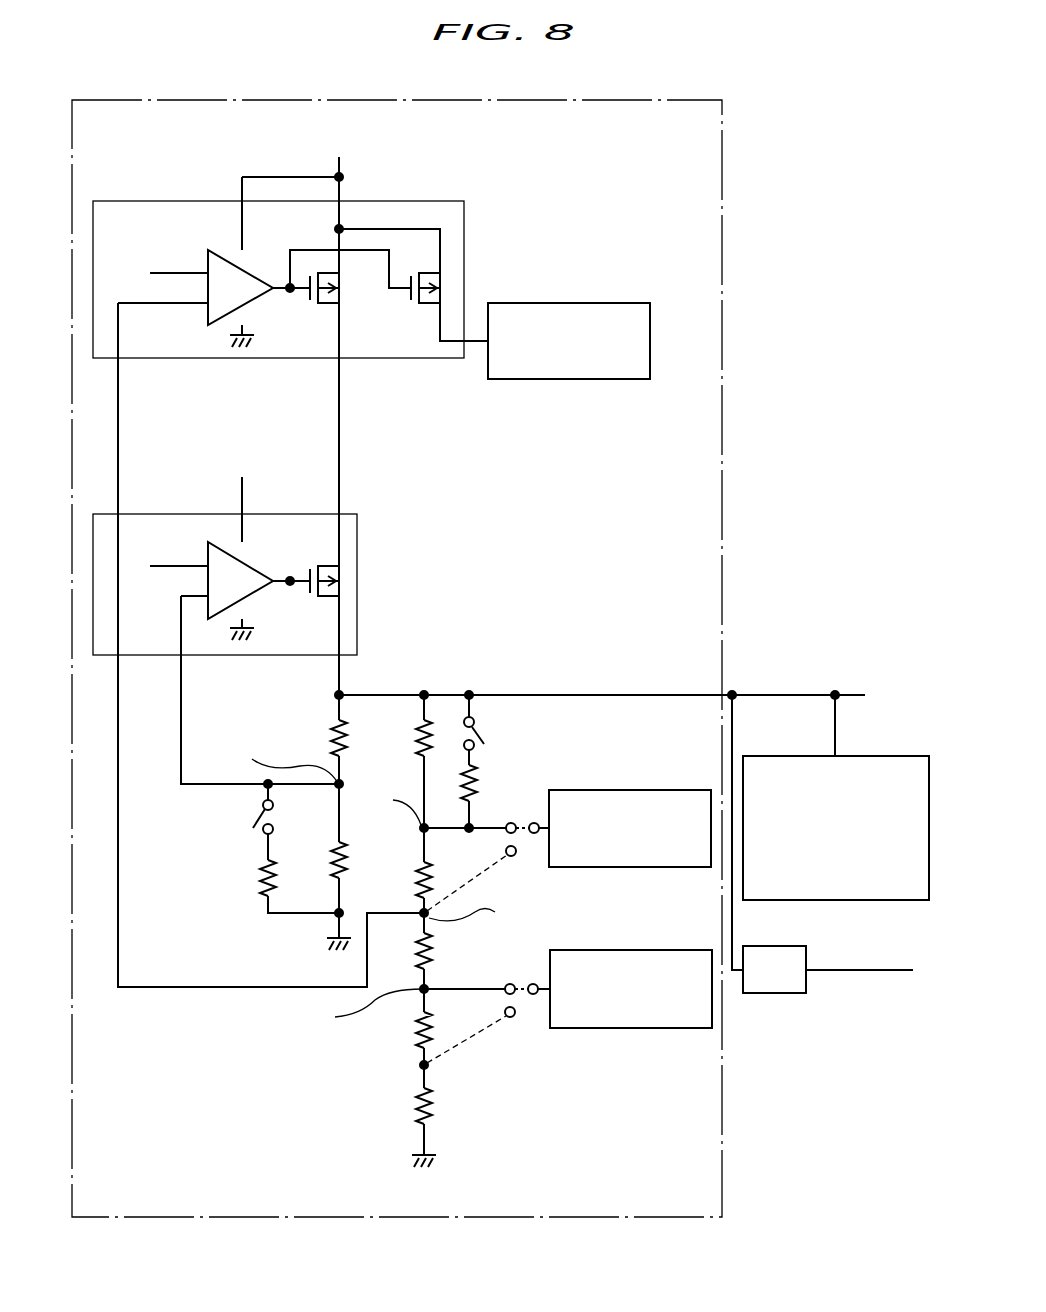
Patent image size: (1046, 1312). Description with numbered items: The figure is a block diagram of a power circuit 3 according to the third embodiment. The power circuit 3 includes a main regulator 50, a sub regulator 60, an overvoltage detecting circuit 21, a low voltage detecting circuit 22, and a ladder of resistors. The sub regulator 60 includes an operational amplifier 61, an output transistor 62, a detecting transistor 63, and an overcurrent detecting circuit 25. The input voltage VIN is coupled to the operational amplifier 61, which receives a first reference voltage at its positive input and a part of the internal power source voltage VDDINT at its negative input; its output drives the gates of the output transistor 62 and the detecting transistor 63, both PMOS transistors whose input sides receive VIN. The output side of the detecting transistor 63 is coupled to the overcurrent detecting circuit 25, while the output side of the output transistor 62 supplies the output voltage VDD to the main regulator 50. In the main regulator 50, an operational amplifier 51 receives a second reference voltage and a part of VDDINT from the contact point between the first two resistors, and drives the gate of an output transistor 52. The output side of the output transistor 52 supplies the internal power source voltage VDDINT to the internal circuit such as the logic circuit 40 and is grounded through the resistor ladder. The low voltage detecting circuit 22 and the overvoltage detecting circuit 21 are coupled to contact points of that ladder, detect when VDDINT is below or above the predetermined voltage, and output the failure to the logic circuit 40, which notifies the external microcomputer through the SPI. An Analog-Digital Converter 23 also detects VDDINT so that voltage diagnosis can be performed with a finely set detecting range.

The power circuit 3 is at (513, 137).
The sub regulator 60 is at (412, 201).
The operational amplifier 61 is at (224, 250).
The output transistor 62 is at (327, 305).
The detecting transistor 63 is at (428, 305).
The overcurrent detecting circuit 25 is at (612, 380).
The main regulator 50 is at (358, 537).
The operational amplifier 51 is at (222, 541).
The output transistor 52 is at (327, 600).
The low voltage detecting circuit 22 is at (672, 790).
The overvoltage detecting circuit 21 is at (672, 1029).
The logic circuit 40 is at (885, 757).
The Analog-Digital Converter (ADC) 23 is at (780, 995).